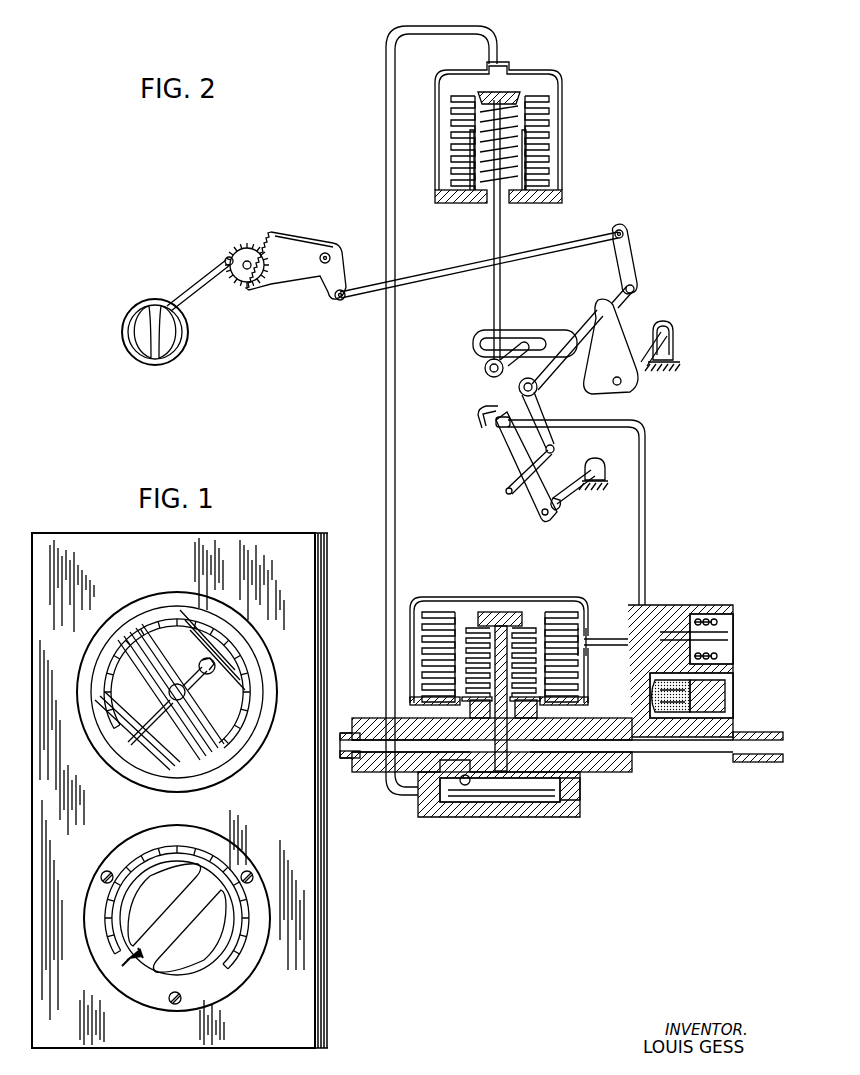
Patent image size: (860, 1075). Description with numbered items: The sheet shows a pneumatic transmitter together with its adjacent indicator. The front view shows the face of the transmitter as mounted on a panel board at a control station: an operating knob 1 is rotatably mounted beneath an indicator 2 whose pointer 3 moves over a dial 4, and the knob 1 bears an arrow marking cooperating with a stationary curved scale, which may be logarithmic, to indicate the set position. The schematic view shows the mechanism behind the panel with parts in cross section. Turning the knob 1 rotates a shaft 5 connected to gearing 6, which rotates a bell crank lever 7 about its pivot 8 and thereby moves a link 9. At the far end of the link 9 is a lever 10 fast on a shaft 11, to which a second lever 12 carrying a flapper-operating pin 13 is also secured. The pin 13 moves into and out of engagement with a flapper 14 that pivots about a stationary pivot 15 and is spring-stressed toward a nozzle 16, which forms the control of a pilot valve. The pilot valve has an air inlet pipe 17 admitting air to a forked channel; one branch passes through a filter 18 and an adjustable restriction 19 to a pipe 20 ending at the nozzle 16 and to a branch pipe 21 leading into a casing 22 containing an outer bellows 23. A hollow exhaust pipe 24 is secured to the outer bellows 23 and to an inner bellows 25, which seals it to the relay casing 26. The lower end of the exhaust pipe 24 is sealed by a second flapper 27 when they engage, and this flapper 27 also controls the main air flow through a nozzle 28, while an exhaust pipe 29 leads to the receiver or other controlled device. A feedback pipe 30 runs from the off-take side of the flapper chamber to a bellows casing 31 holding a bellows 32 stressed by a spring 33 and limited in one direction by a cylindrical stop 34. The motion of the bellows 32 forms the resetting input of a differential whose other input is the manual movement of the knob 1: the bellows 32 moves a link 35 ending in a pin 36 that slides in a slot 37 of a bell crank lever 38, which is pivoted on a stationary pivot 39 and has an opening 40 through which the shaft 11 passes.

In FIG. 2, the operating knob 1 is at (118, 334).
In FIG. 1, the operating knob 1 is at (155, 870).
In FIG. 1, the indicator 2 is at (148, 600).
In FIG. 1, the pointer 3 is at (170, 702).
In FIG. 1, the dial 4 is at (248, 683).
In FIG. 2, the shaft 5 is at (195, 290).
In FIG. 2, the gearing 6 is at (256, 242).
In FIG. 2, the bell crank lever 7 is at (305, 243).
In FIG. 2, the pivot 8 is at (329, 254).
In FIG. 2, the link 9 is at (446, 270).
In FIG. 2, the lever 10 is at (630, 262).
In FIG. 2, the shaft 11 is at (626, 300).
In FIG. 2, the second lever 12 is at (523, 398).
In FIG. 2, the flapper-operating pin 13 is at (506, 490).
In FIG. 2, the flapper 14 is at (512, 452).
In FIG. 2, the stationary pivot 15 is at (584, 494).
In FIG. 2, the nozzle 16 is at (492, 425).
In FIG. 2, the air inlet pipe 17 is at (750, 732).
In FIG. 2, the filter 18 is at (735, 690).
In FIG. 2, the adjustable restriction 19 is at (735, 628).
In FIG. 2, the pipe 20 is at (648, 524).
In FIG. 2, the branch pipe 21 is at (598, 638).
In FIG. 2, the casing 22 is at (466, 597).
In FIG. 2, the outer bellows 23 is at (426, 612).
In FIG. 2, the hollow exhaust pipe 24 is at (498, 612).
In FIG. 2, the inner bellows 25 is at (553, 612).
In FIG. 2, the relay casing 26 is at (482, 818).
In FIG. 2, the second flapper 27 is at (506, 802).
In FIG. 2, the nozzle 28 is at (572, 788).
In FIG. 2, the exhaust pipe 29 is at (346, 730).
In FIG. 2, the feedback pipe 30 is at (386, 437).
In FIG. 2, the bellows casing 31 is at (546, 72).
In FIG. 2, the bellows 32 is at (553, 110).
In FIG. 2, the spring 33 is at (520, 165).
In FIG. 2, the cylindrical stop 34 is at (526, 142).
In FIG. 2, the link 35 is at (500, 222).
In FIG. 2, the pin 36 is at (512, 338).
In FIG. 2, the slot 37 is at (484, 364).
In FIG. 2, the bell crank lever 38 is at (603, 368).
In FIG. 2, the stationary pivot 39 is at (648, 368).
In FIG. 2, the opening 40 is at (598, 304).